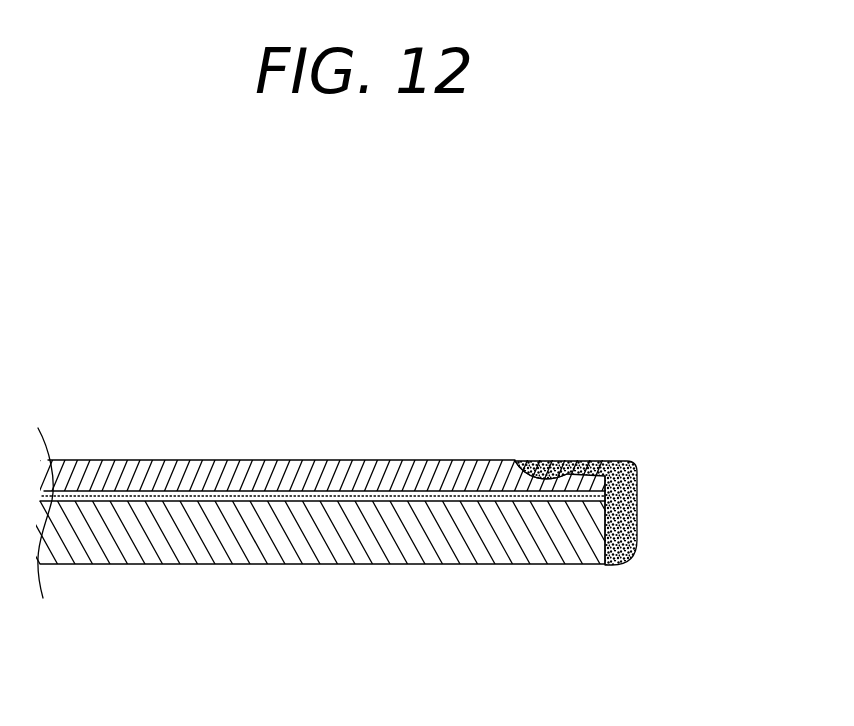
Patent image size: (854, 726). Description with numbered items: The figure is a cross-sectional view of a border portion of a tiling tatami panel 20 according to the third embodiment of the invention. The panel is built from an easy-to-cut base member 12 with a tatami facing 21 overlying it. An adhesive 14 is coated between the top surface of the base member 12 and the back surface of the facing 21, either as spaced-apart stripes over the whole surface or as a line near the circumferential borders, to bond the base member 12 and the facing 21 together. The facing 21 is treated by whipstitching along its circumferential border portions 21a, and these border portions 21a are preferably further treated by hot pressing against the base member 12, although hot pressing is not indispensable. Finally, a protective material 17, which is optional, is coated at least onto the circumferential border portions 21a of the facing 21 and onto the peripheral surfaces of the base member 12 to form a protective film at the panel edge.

The base member 12 is at (328, 538).
The adhesive 14 is at (118, 493).
The protective material 17 is at (633, 507).
The tiling tatami panel 20 is at (232, 405).
The tatami facing 21 is at (285, 470).
The border portions 21a is at (586, 472).